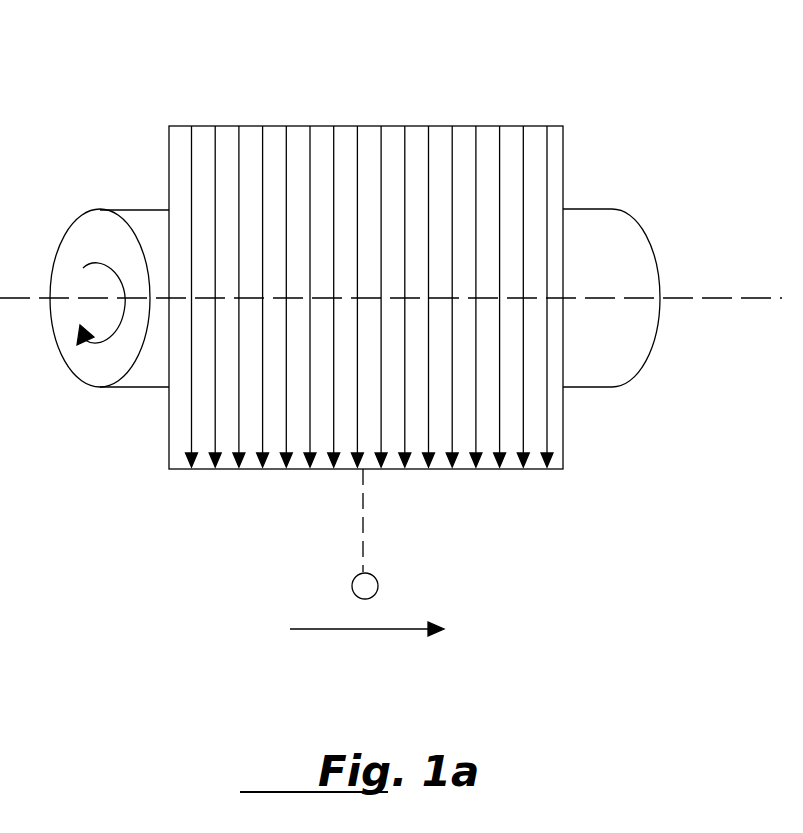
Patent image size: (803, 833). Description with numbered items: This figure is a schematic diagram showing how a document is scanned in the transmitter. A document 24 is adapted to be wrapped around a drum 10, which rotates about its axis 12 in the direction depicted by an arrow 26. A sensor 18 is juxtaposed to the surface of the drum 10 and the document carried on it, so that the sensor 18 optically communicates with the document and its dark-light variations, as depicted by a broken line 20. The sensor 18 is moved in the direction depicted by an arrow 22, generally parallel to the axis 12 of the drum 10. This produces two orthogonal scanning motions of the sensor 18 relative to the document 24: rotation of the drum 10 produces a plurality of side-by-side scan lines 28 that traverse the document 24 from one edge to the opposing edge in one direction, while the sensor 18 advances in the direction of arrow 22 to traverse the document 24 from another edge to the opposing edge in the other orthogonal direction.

The drum 10 is at (597, 228).
The axis 12 is at (690, 296).
The sensor 18 is at (378, 581).
The broken line 20 is at (362, 505).
The arrow 22 is at (377, 630).
The document 24 is at (176, 125).
The arrow 26 is at (97, 257).
The scan lines 28 is at (287, 154).